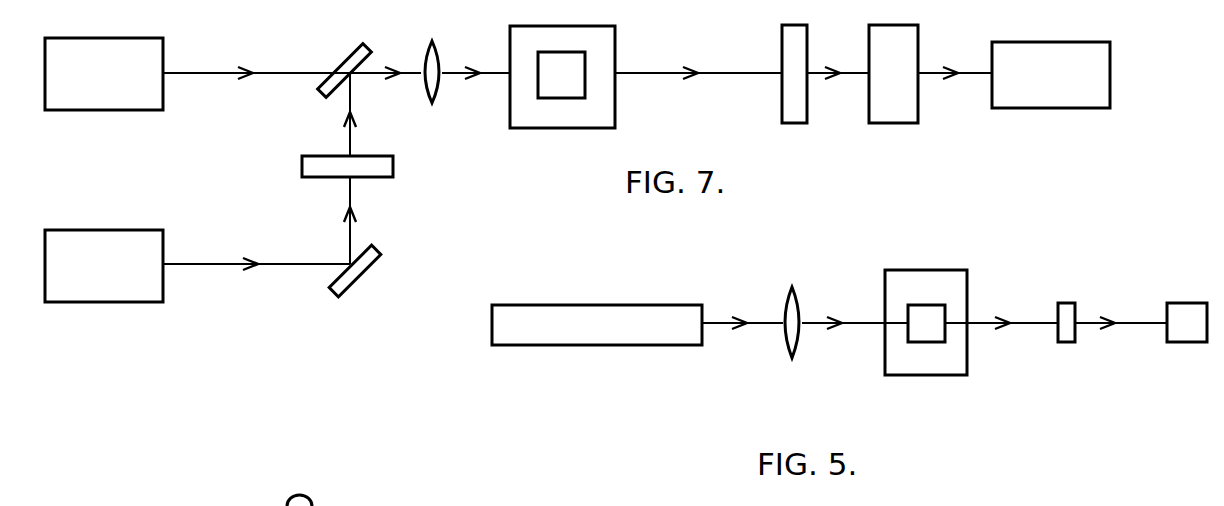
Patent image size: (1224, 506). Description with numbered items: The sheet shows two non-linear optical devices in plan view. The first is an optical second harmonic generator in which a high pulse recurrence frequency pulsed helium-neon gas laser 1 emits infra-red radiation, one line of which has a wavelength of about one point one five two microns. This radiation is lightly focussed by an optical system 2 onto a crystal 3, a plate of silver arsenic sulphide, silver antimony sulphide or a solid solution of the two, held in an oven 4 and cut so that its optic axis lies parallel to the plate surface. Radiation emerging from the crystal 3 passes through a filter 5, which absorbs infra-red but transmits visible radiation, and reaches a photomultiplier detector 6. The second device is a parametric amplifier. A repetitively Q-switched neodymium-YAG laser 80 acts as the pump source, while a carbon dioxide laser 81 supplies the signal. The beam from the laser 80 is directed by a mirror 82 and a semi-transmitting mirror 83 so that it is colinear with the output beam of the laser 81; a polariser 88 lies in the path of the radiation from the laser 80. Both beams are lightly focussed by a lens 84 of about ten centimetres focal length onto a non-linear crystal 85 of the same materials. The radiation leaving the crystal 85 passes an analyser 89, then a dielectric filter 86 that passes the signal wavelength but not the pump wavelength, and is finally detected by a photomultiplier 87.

In FIG. 5, the helium-neon gas laser 1 is at (620, 345).
In FIG. 5, the optical system 2 is at (787, 350).
In FIG. 5, the crystal 3 is at (907, 328).
In FIG. 5, the oven 4 is at (945, 366).
In FIG. 5, the filter 5 is at (1062, 340).
In FIG. 5, the photomultiplier detector 6 is at (1187, 342).
In FIG. 7, the neodymium-YAG laser 80 is at (163, 278).
In FIG. 7, the carbon dioxide laser 81 is at (153, 100).
In FIG. 7, the mirror 82 is at (375, 266).
In FIG. 7, the semi-transmitting mirror 83 is at (340, 58).
In FIG. 7, the lens 84 is at (437, 42).
In FIG. 7, the non-linear crystal 85 is at (572, 72).
In FIG. 7, the dielectric filter 86 is at (918, 50).
In FIG. 7, the photomultiplier 87 is at (1063, 42).
In FIG. 7, the polariser 88 is at (385, 165).
In FIG. 7, the analyser 89 is at (780, 48).